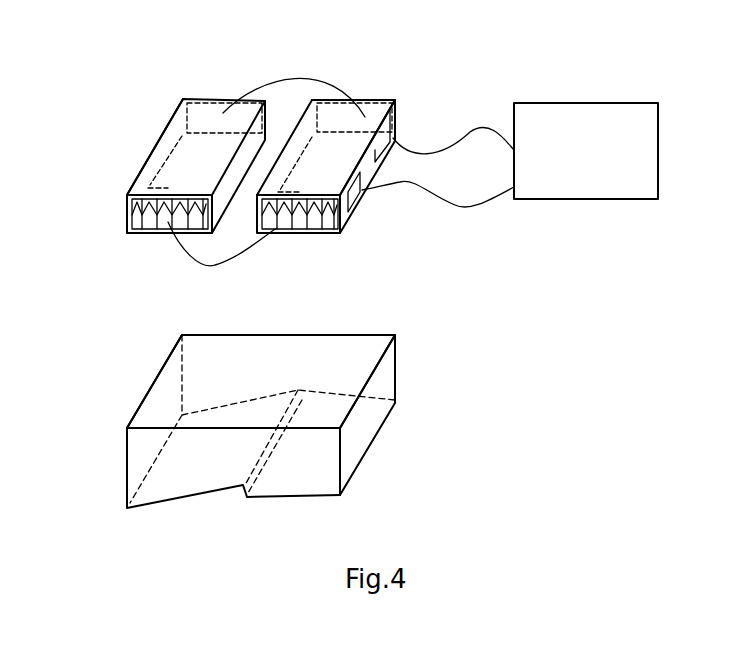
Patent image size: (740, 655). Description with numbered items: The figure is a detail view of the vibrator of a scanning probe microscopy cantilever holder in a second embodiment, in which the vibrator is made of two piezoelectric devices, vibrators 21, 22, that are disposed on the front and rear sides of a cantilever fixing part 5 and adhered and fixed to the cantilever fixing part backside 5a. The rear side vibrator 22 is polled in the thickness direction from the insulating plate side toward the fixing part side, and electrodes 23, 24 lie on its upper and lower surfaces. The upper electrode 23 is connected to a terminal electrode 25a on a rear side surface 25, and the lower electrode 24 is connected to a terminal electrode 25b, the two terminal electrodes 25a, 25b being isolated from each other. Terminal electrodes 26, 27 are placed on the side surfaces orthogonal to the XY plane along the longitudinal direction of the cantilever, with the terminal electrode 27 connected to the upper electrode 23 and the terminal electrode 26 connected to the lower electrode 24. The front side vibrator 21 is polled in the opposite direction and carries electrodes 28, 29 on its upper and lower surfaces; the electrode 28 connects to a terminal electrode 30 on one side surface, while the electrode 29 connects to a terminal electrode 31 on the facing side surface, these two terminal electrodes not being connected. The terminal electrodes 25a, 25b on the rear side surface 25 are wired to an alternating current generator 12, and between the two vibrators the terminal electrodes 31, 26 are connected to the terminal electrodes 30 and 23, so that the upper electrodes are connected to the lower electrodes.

The cantilever fixing part 5 is at (368, 437).
The cantilever fixing part backside 5a is at (342, 357).
The alternating current generator 12 is at (607, 100).
The vibrator 21 is at (218, 68).
The vibrator 22 is at (370, 63).
The electrode 23 is at (325, 108).
The electrode 24 is at (312, 233).
The rear side surface 25 is at (375, 178).
The terminal electrode 25a is at (390, 128).
The terminal electrode 25b is at (362, 203).
The terminal electrode 26 is at (276, 228).
The terminal electrode 27 is at (375, 107).
The electrode 28 is at (155, 152).
The electrode 29 is at (137, 188).
The terminal electrode 30 is at (207, 107).
The terminal electrode 31 is at (147, 227).